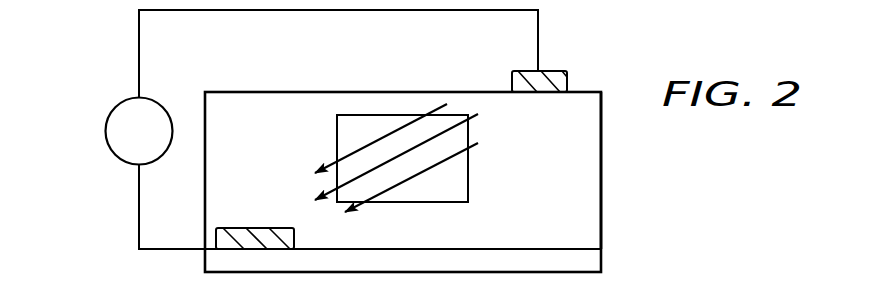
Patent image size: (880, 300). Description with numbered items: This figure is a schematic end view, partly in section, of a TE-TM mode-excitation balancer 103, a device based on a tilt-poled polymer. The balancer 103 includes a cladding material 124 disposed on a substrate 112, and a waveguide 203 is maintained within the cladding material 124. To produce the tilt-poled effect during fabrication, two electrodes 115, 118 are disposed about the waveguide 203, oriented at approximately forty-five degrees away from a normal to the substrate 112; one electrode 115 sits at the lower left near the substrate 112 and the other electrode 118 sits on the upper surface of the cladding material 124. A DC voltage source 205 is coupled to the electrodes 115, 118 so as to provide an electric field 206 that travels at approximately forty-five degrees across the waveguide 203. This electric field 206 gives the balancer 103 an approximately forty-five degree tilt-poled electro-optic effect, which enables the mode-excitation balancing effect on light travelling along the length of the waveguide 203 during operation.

The TE-TM mode-excitation balancer 103 is at (292, 74).
The substrate 112 is at (601, 262).
The electrode 115 is at (257, 227).
The electrode 118 is at (559, 70).
The cladding material 124 is at (600, 170).
The waveguide 203 is at (468, 179).
The DC voltage source 205 is at (105, 130).
The electric field 206 is at (350, 153).